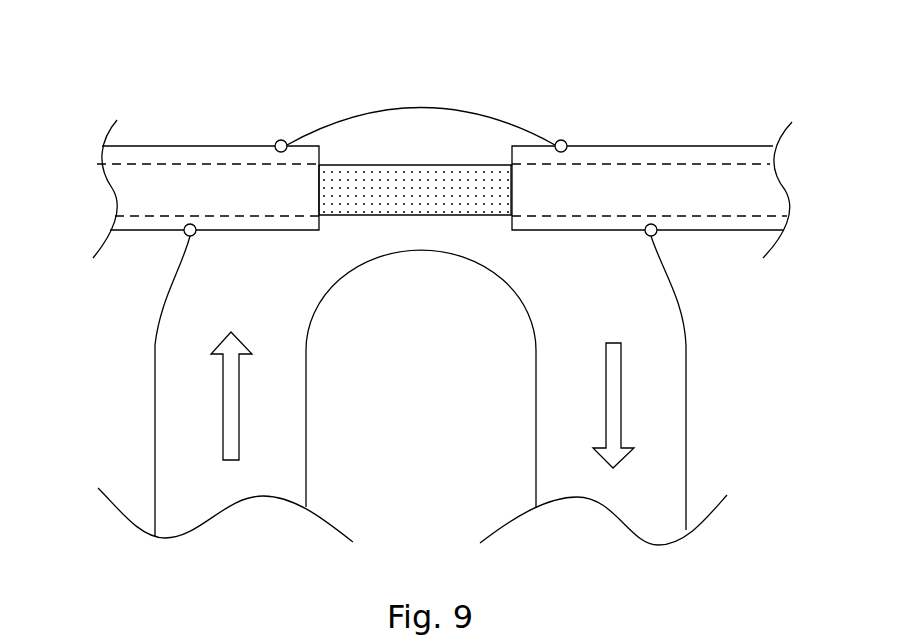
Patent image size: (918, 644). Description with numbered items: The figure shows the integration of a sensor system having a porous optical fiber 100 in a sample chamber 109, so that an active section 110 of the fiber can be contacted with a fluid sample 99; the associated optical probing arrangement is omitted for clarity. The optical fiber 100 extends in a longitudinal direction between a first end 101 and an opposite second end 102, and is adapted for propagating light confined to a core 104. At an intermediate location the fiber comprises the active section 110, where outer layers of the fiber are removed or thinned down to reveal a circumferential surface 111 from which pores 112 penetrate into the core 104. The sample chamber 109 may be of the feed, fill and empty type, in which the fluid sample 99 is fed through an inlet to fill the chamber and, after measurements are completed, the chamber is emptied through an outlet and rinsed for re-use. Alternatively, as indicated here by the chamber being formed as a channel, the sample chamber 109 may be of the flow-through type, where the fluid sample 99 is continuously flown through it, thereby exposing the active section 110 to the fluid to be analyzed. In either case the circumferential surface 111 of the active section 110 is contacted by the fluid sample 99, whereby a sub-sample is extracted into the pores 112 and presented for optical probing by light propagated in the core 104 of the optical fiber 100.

The optical fiber 100 is at (177, 110).
The first end 101 is at (181, 188).
The second end 102 is at (682, 188).
The core 104 is at (213, 182).
The sample chamber 109 is at (193, 303).
The active section 110 is at (397, 175).
The circumferential surface 111 is at (431, 165).
The pores 112 is at (470, 183).
The fluid sample 99 is at (230, 408).